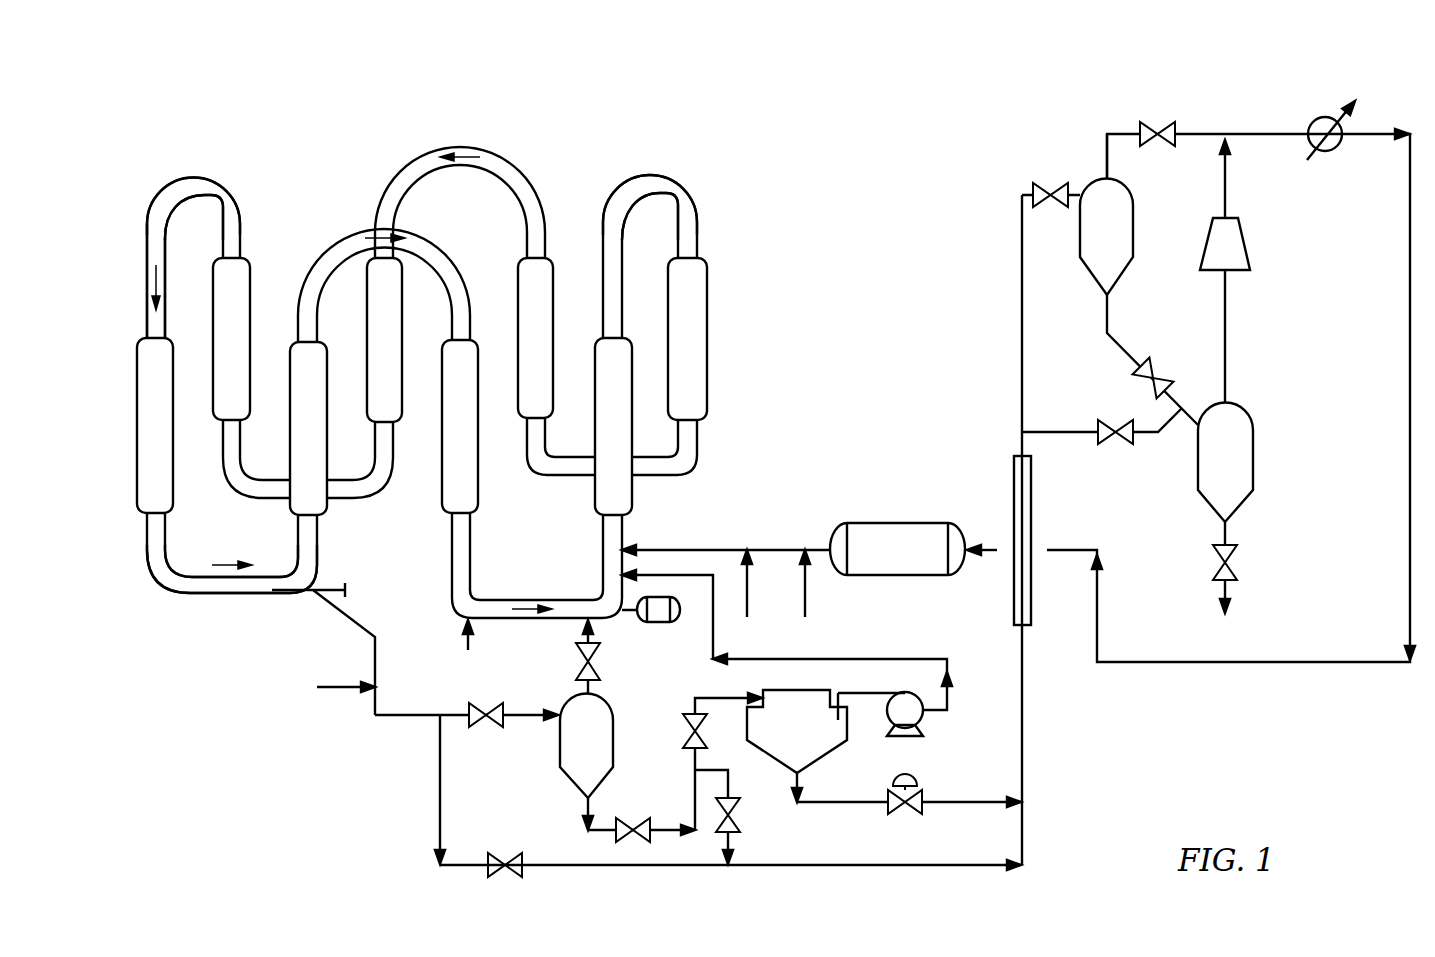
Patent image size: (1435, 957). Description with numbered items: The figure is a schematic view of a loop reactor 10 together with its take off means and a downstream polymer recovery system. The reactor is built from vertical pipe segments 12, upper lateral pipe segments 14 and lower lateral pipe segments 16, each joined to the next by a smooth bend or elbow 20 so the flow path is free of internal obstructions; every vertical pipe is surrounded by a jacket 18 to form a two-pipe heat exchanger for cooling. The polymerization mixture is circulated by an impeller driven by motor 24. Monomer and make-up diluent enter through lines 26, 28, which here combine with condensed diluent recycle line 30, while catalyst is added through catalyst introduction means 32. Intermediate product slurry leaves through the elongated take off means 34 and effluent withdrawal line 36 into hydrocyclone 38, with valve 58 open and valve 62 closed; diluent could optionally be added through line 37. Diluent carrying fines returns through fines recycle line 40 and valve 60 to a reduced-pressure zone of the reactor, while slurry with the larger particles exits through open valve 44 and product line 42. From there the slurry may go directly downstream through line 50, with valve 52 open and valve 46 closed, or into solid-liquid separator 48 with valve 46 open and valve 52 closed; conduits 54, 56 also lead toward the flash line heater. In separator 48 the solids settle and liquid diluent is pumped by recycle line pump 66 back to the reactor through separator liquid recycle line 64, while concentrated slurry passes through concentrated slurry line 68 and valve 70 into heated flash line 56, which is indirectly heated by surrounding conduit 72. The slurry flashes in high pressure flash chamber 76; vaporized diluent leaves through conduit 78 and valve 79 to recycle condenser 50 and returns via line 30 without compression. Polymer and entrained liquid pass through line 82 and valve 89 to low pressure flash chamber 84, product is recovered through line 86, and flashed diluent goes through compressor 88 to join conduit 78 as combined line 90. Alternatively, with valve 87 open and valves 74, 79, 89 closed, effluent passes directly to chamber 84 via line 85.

The loop reactor 10 is at (398, 342).
The vertical pipe segments 12 is at (147, 305).
The upper lateral pipe segments 14 is at (198, 180).
The lower lateral pipe segments 16 is at (660, 476).
The jacket 18 is at (171, 457).
The smooth bend or elbow 20 is at (293, 559).
The motor 24 is at (663, 623).
The line 26 is at (808, 600).
The line 28 is at (750, 600).
The condensed diluent recycle line 30 is at (722, 548).
The catalyst introduction means 32 is at (468, 650).
The take off means 34 is at (305, 593).
The effluent withdrawal line 36 is at (402, 717).
The line 37 is at (338, 690).
The hydrocyclone 38 is at (571, 752).
The fines recycle line 40 is at (580, 690).
The product line 42 is at (668, 828).
The valve 44 is at (630, 817).
The valve 46 is at (688, 727).
The solid-liquid separator 48 is at (781, 741).
The line / recycle condenser 50 is at (728, 785).
The valve 52 is at (740, 818).
The line 54 is at (787, 867).
The heated flash line 56 is at (1025, 735).
The valve 58 is at (478, 702).
The valve 60 is at (600, 670).
The valve 62 is at (507, 852).
The separator liquid recycle line 64 is at (917, 657).
The recycle line pump 66 is at (925, 718).
The concentrated slurry line 68 is at (845, 802).
The valve 70 is at (893, 815).
The surrounding conduit 72 is at (1012, 505).
The valve 74 is at (1043, 190).
The high pressure flash chamber 76 is at (1090, 237).
The conduit 78 is at (1112, 132).
The valve 79 is at (1162, 130).
The line 82 is at (1120, 342).
The low pressure flash chamber 84 is at (1208, 461).
The line 85 is at (1058, 430).
The line 86 is at (1225, 592).
The valve 87 is at (1105, 444).
The compressor 88 is at (1246, 250).
The valve 89 is at (1162, 375).
The combined line 90 is at (1252, 132).